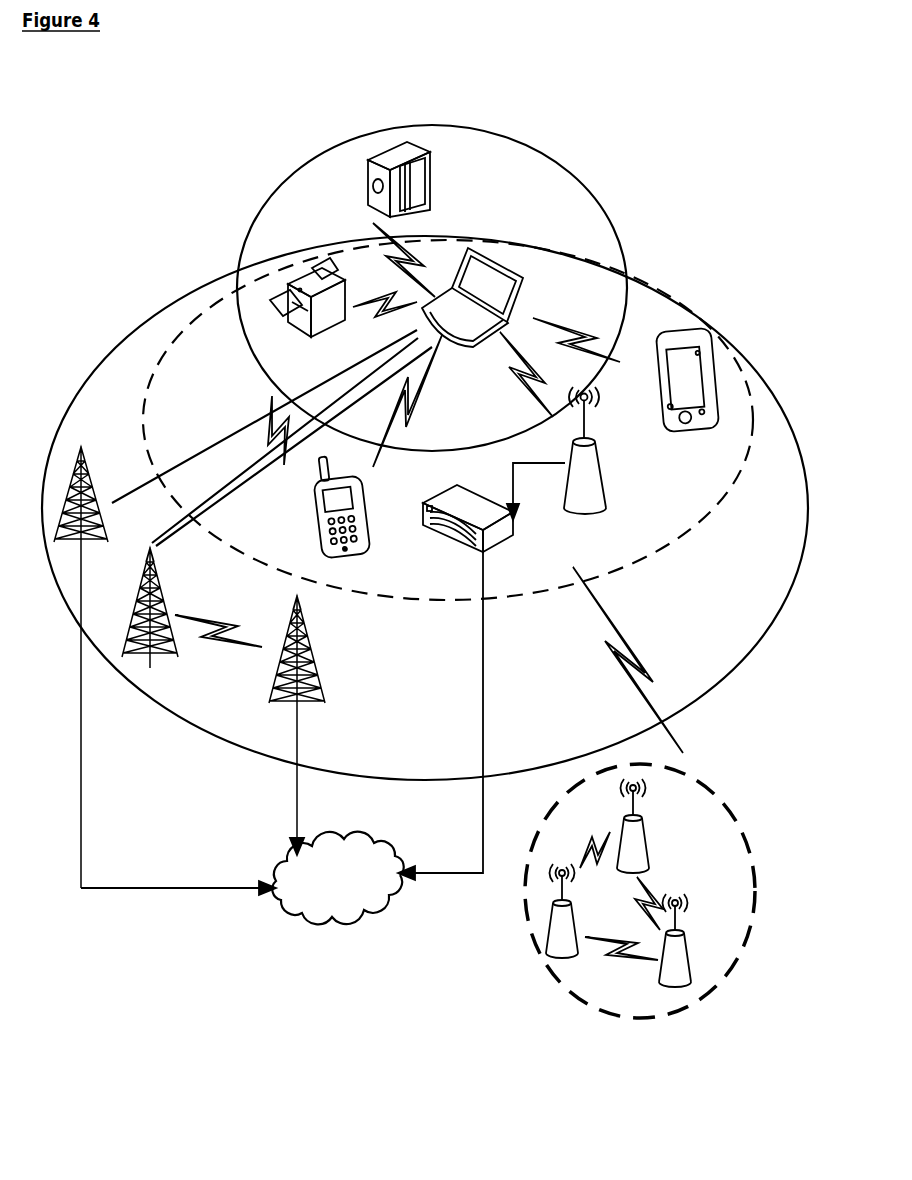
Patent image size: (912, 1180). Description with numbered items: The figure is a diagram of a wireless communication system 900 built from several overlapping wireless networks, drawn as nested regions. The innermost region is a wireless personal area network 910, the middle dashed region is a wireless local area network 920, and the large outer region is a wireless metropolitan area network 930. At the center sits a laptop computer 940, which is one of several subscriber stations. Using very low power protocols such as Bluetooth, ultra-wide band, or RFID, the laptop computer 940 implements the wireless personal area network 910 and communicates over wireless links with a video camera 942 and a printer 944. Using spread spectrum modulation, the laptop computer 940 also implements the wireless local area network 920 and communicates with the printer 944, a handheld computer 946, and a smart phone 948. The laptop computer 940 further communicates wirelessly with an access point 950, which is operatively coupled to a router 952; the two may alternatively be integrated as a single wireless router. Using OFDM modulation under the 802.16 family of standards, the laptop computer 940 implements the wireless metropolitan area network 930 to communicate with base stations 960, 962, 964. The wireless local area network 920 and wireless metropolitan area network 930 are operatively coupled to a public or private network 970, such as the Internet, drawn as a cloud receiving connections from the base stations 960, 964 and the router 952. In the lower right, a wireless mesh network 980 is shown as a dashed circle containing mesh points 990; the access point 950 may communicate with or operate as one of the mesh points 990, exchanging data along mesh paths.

The wireless communication system 900 is at (653, 154).
The wireless personal area network (WPAN) 910 is at (240, 258).
The wireless local area network (WLAN) 920 is at (176, 330).
The wireless metropolitan area network (WMAN) 930 is at (118, 345).
The laptop computer 940 is at (505, 250).
The video camera 942 is at (431, 186).
The printer 944 is at (334, 324).
The handheld computer 946 is at (697, 430).
The smart phone 948 is at (357, 553).
The access point (AP) 950 is at (600, 509).
The router 952 is at (494, 550).
The base station 960 is at (82, 432).
The base station 962 is at (163, 616).
The base station 964 is at (314, 680).
The network 970 is at (392, 850).
The wireless mesh network 980 is at (731, 814).
The mesh point (MP) 990 is at (672, 879).